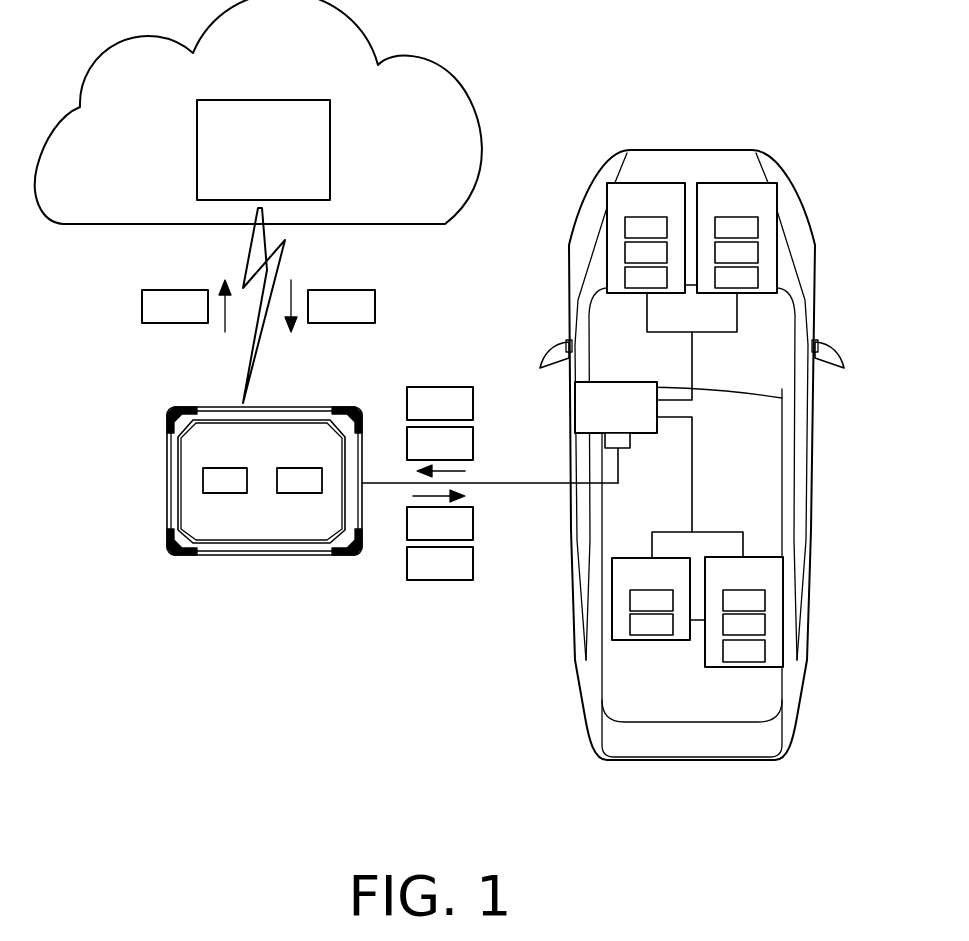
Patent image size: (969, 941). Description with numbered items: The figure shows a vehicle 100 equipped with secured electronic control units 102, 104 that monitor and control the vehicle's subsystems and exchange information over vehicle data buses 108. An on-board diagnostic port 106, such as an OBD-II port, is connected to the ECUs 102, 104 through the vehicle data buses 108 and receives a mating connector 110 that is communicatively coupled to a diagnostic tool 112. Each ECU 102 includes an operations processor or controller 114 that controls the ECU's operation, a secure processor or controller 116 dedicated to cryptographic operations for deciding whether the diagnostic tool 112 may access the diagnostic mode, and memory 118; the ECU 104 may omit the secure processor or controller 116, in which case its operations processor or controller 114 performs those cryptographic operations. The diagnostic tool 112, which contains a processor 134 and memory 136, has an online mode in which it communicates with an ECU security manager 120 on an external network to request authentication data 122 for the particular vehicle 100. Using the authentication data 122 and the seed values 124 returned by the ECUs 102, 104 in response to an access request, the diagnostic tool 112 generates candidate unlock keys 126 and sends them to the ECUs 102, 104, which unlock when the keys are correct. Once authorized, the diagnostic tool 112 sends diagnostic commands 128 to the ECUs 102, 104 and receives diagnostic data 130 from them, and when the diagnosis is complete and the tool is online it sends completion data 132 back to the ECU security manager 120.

The vehicle 100 is at (732, 150).
The secured electronic control unit 102 is at (639, 183).
The secured electronic control unit 104 is at (656, 641).
The on-board diagnostic port 106 is at (611, 382).
The vehicle data bus 108 is at (693, 360).
The mating connector 110 is at (630, 447).
The diagnostic tool 112 is at (264, 465).
The operations processor or controller 114 is at (635, 286).
The secure processor or controller 116 is at (635, 261).
The memory 118 is at (635, 236).
The ECU security manager 120 is at (264, 100).
The authentication data 122 is at (328, 316).
The seed value 124 is at (427, 453).
The candidate unlock key 126 is at (427, 533).
The diagnostic command 128 is at (427, 573).
The diagnostic data 130 is at (427, 413).
The completion data 132 is at (162, 316).
The processor 134 is at (288, 489).
The memory 136 is at (213, 489).